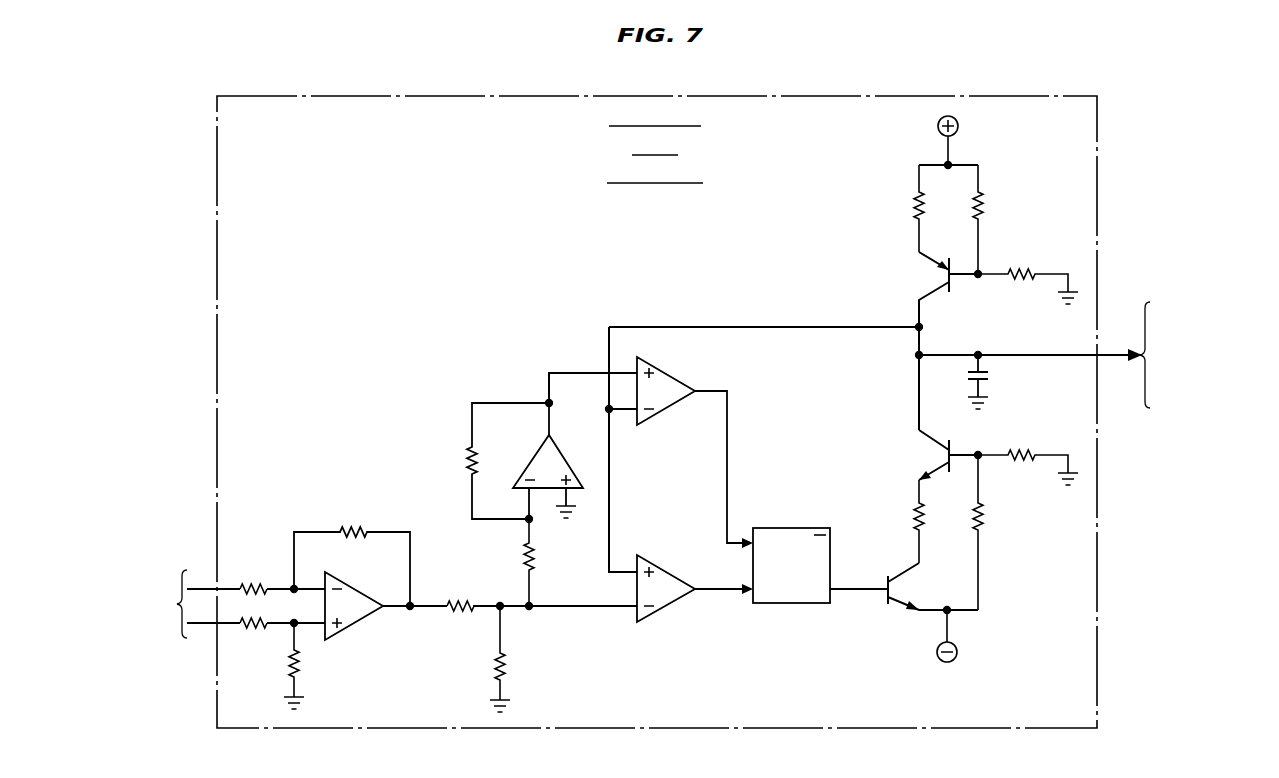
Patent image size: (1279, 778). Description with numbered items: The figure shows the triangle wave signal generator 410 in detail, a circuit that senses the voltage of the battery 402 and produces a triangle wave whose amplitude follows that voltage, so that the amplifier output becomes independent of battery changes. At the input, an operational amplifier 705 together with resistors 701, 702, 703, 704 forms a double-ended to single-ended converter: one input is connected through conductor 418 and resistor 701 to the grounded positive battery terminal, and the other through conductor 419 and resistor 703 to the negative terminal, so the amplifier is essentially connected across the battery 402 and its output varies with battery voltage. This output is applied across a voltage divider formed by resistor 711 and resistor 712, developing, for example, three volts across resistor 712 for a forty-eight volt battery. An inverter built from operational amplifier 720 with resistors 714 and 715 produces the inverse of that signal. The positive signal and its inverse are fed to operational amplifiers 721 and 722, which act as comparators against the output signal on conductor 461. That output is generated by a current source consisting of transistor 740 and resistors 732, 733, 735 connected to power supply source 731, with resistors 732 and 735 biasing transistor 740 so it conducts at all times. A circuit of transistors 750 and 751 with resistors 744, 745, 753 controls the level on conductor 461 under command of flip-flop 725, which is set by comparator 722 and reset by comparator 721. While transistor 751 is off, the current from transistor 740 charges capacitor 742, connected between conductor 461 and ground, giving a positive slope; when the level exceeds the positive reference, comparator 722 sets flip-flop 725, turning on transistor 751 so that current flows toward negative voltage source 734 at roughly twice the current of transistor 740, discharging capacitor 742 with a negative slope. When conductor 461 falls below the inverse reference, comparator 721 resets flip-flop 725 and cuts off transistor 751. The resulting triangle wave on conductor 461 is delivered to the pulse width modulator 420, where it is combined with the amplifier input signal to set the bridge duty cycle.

The triangle wave signal generator 410 is at (658, 95).
The battery 402 is at (143, 604).
The conductor 418 is at (196, 587).
The conductor 419 is at (196, 627).
The resistor 701 is at (256, 581).
The resistor 702 is at (357, 528).
The resistor 703 is at (256, 631).
The resistor 704 is at (305, 664).
The operational amplifier 705 is at (357, 619).
The resistor 711 is at (457, 615).
The resistor 712 is at (507, 666).
The resistor 714 is at (521, 558).
The resistor 715 is at (465, 460).
The operational amplifier 720 is at (566, 457).
The operational amplifier (comparator) 721 is at (670, 383).
The operational amplifier (comparator) 722 is at (662, 570).
The flip-flop 725 is at (790, 528).
The power supply source 731 is at (937, 127).
The resistor 732 is at (986, 208).
The resistor 733 is at (912, 208).
The resistor 735 is at (1023, 270).
The transistor 740 is at (930, 274).
The capacitor 742 is at (990, 376).
The resistor 744 is at (1023, 451).
The resistor 745 is at (986, 524).
The transistor 750 is at (931, 455).
The transistor 751 is at (905, 588).
The resistor 753 is at (912, 524).
The negative voltage source 734 is at (957, 652).
The conductor 461 is at (1112, 353).
The pulse width modulator circuit 420 is at (1198, 355).